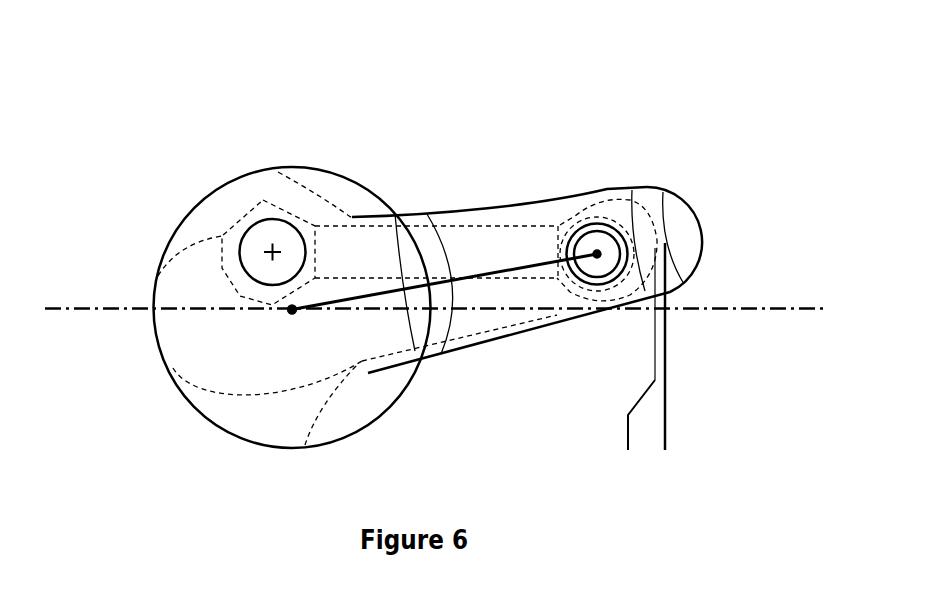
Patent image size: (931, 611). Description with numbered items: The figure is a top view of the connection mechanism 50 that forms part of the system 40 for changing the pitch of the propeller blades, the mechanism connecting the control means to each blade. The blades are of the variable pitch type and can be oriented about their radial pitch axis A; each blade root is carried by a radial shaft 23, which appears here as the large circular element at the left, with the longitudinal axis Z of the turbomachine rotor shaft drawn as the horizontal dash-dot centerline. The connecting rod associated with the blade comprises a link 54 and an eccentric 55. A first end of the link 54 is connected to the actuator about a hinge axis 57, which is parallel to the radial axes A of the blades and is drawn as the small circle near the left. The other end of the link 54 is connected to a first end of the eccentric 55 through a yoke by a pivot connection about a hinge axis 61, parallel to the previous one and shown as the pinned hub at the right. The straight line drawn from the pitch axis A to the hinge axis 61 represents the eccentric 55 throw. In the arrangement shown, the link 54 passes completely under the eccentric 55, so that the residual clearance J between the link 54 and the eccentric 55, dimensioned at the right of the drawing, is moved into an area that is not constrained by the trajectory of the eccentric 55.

The radial shaft 23 is at (252, 444).
The system for changing the pitch of the blades 40 is at (116, 134).
The connection mechanism 50 is at (527, 236).
The link 54 is at (447, 238).
The eccentric 55 is at (490, 340).
The hinge axis 57 is at (271, 248).
The hinge axis 61 is at (597, 253).
The pitch axis A is at (293, 313).
The residual clearance J is at (663, 437).
The longitudinal axis Z is at (780, 308).